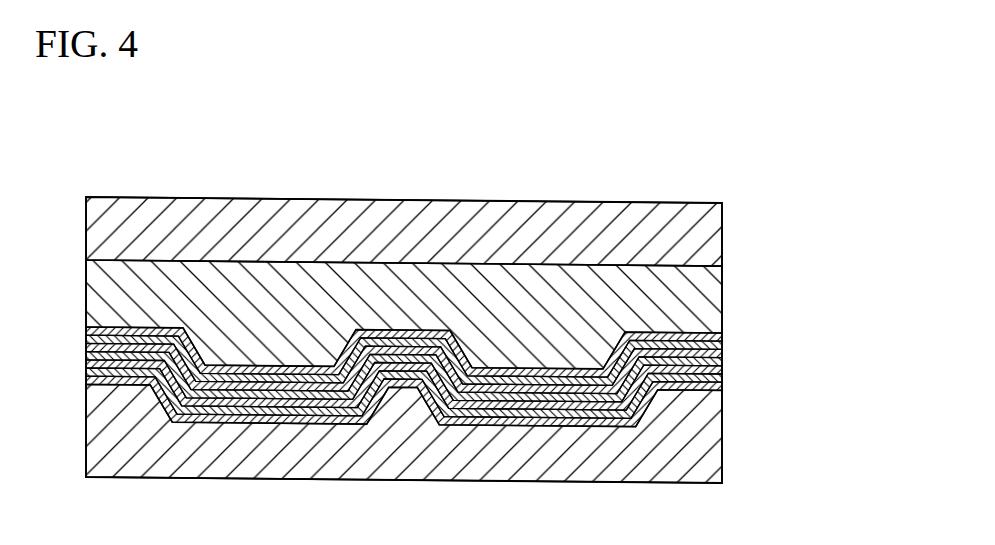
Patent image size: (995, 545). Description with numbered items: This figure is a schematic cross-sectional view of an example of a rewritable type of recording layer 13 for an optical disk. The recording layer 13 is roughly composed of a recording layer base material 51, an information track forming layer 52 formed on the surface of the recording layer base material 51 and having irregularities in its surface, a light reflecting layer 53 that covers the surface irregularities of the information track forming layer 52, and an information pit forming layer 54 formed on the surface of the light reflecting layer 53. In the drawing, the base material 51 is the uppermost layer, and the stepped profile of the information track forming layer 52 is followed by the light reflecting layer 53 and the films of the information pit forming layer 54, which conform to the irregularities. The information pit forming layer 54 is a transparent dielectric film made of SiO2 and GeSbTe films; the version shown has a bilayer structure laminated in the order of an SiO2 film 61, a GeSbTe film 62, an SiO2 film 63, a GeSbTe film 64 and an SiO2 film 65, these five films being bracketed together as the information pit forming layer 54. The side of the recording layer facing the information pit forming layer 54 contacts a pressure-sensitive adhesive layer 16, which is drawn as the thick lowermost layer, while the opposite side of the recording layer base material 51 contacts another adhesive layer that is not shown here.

The recording layer 13 is at (482, 184).
The recording layer base material 51 is at (723, 231).
The information track forming layer 52 is at (723, 287).
The light reflecting layer 53 is at (723, 338).
The information pit forming layer 54 is at (482, 381).
The SiO2 film 61 is at (723, 345).
The GeSbTe film 62 is at (723, 352).
The SiO2 film 63 is at (723, 367).
The GeSbTe film 64 is at (723, 382).
The SiO2 film 65 is at (457, 403).
The pressure-sensitive adhesive layer 16 is at (723, 435).